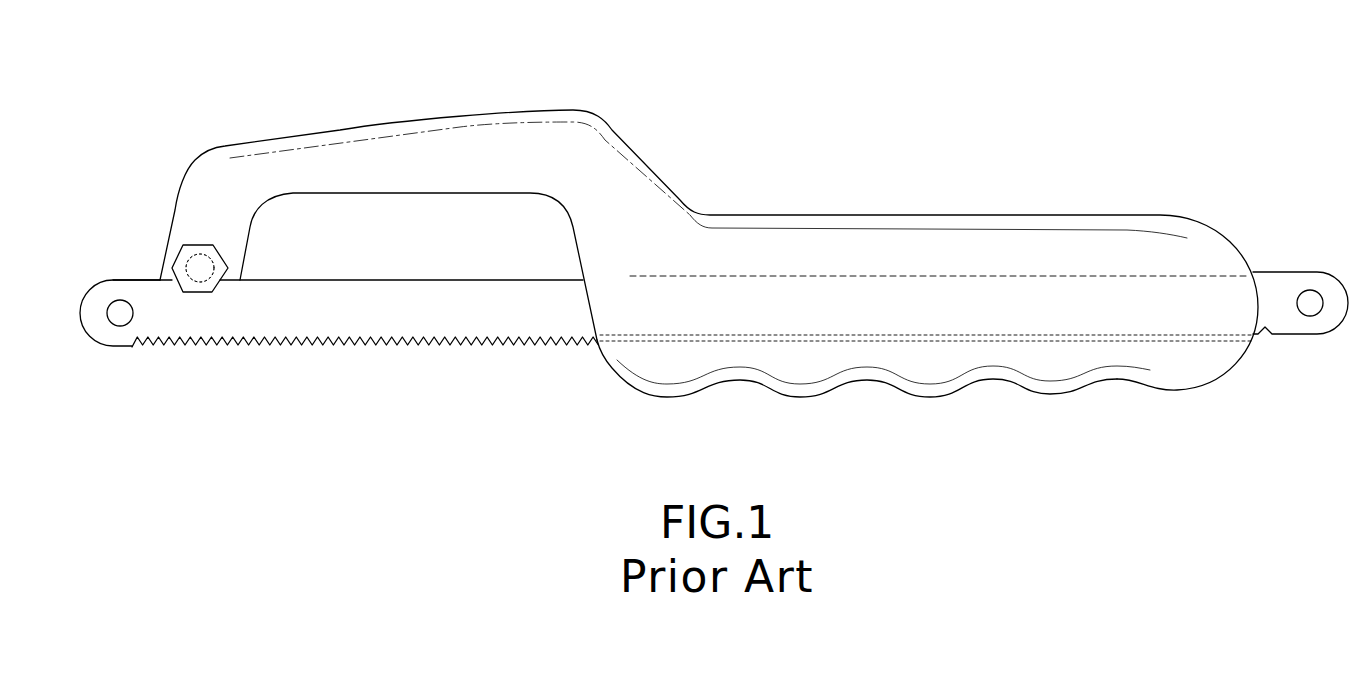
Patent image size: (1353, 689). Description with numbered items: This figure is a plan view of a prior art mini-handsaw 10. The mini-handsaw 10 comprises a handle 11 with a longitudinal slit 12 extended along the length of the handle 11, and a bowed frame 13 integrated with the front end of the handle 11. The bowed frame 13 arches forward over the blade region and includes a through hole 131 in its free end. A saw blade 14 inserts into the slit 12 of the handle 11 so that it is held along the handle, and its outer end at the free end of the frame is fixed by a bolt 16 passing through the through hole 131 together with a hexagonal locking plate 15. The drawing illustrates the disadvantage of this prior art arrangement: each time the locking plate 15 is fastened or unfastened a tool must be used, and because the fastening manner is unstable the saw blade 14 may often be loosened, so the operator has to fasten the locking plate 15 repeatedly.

The mini-handsaw 10 is at (917, 155).
The handle 11 is at (1037, 245).
The longitudinal slit 12 is at (1103, 335).
The bowed frame 13 is at (433, 148).
The saw blade 14 is at (433, 320).
The hexagonal locking plate 15 is at (213, 293).
The through hole 131 is at (175, 293).
The bolt 16 is at (185, 337).